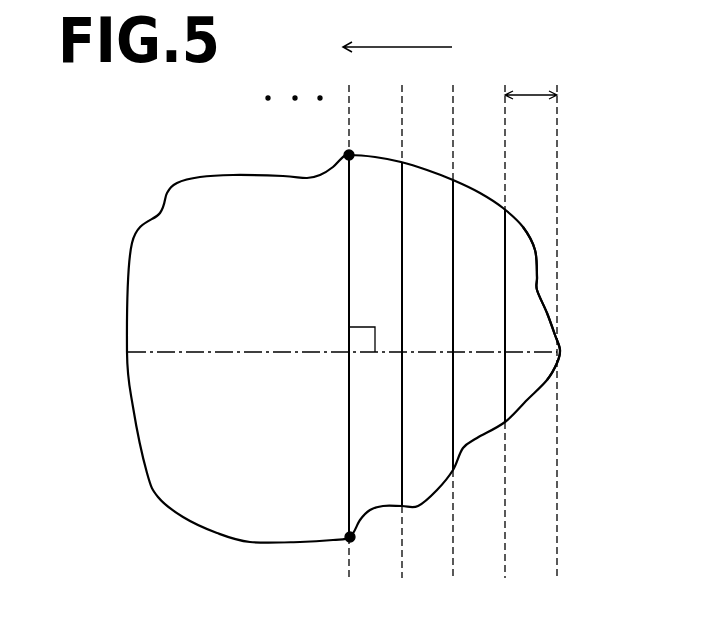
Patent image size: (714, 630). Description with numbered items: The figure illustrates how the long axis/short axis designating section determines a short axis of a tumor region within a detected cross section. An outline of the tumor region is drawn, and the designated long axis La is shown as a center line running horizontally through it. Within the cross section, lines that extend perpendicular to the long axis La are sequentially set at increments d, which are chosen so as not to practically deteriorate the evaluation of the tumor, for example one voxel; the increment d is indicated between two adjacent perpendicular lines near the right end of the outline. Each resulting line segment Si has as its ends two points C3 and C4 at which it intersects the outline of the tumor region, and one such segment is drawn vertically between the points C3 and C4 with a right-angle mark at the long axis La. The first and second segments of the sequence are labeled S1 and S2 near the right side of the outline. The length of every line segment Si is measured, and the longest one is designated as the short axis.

The line segment Si is at (347, 222).
The point C3 is at (329, 141).
The point C4 is at (329, 555).
The long axis La is at (177, 350).
The line segment S1 is at (560, 345).
The line segment S2 is at (508, 298).
The increment d is at (531, 81).